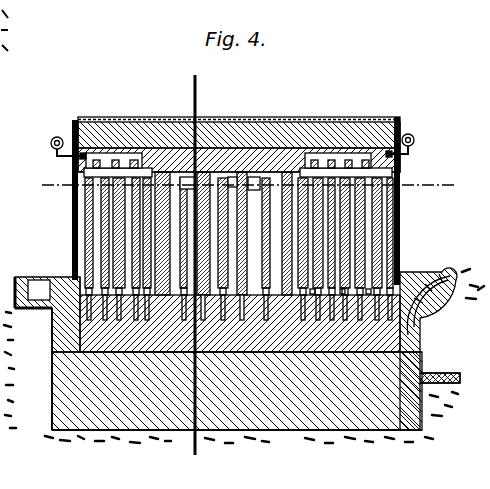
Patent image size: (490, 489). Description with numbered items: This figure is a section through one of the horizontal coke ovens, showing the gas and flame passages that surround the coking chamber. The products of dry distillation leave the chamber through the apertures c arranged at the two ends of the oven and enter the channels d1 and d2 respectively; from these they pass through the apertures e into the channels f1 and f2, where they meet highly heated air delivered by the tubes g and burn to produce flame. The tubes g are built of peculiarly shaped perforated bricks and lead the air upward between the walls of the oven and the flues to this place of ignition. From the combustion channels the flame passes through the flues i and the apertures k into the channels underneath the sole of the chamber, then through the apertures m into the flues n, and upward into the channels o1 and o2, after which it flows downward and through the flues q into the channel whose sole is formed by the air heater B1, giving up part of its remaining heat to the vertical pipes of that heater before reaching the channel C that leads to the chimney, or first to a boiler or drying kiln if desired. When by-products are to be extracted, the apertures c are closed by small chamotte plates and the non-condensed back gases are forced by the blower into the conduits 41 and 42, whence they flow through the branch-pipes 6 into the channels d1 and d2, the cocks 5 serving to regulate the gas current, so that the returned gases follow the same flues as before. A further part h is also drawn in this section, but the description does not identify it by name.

The conduit 41 is at (56, 137).
The conduit 42 is at (412, 136).
The cock 5 is at (56, 156).
The branch-pipe 6 is at (72, 158).
The channel d1 is at (98, 162).
The aperture e is at (112, 160).
The channel f1 is at (148, 172).
The flue n is at (152, 205).
The channel o1 is at (182, 200).
The channel o2 is at (255, 200).
The aperture c is at (330, 158).
The channel d2 is at (348, 160).
The channel f2 is at (364, 172).
The tube g is at (150, 223).
The flue i is at (150, 250).
The base ledge h is at (153, 292).
The aperture k is at (312, 292).
The channel C is at (430, 349).
The air heater B1 is at (486, 353).
The aperture m is at (235, 292).
The flue q is at (198, 440).